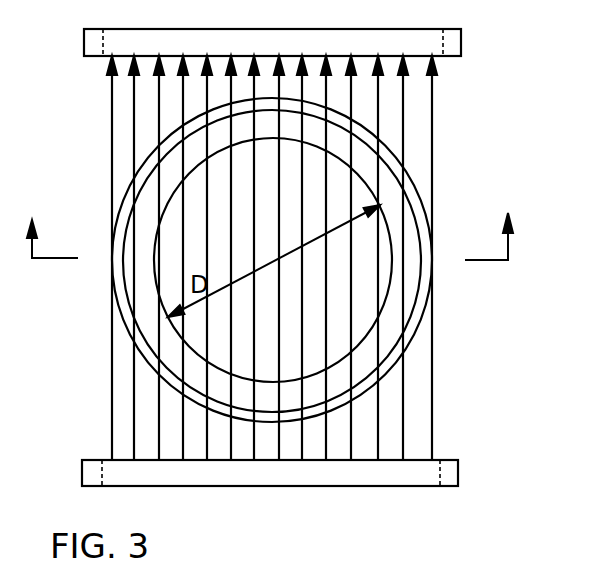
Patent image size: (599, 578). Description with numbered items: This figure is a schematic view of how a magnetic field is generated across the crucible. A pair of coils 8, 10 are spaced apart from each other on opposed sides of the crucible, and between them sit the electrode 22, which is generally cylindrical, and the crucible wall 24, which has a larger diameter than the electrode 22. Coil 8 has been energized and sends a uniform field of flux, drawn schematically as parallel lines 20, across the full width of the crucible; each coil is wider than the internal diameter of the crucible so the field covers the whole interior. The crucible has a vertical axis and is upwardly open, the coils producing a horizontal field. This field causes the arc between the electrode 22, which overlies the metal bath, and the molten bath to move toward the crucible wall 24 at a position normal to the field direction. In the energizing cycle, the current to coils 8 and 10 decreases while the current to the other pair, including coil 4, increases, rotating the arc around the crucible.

The coil 10 is at (290, 54).
The coil 8 is at (283, 484).
The parallel lines 20 is at (133, 96).
The electrode 22 is at (297, 237).
The crucible wall 24 is at (113, 280).
The coil 4 is at (270, 222).